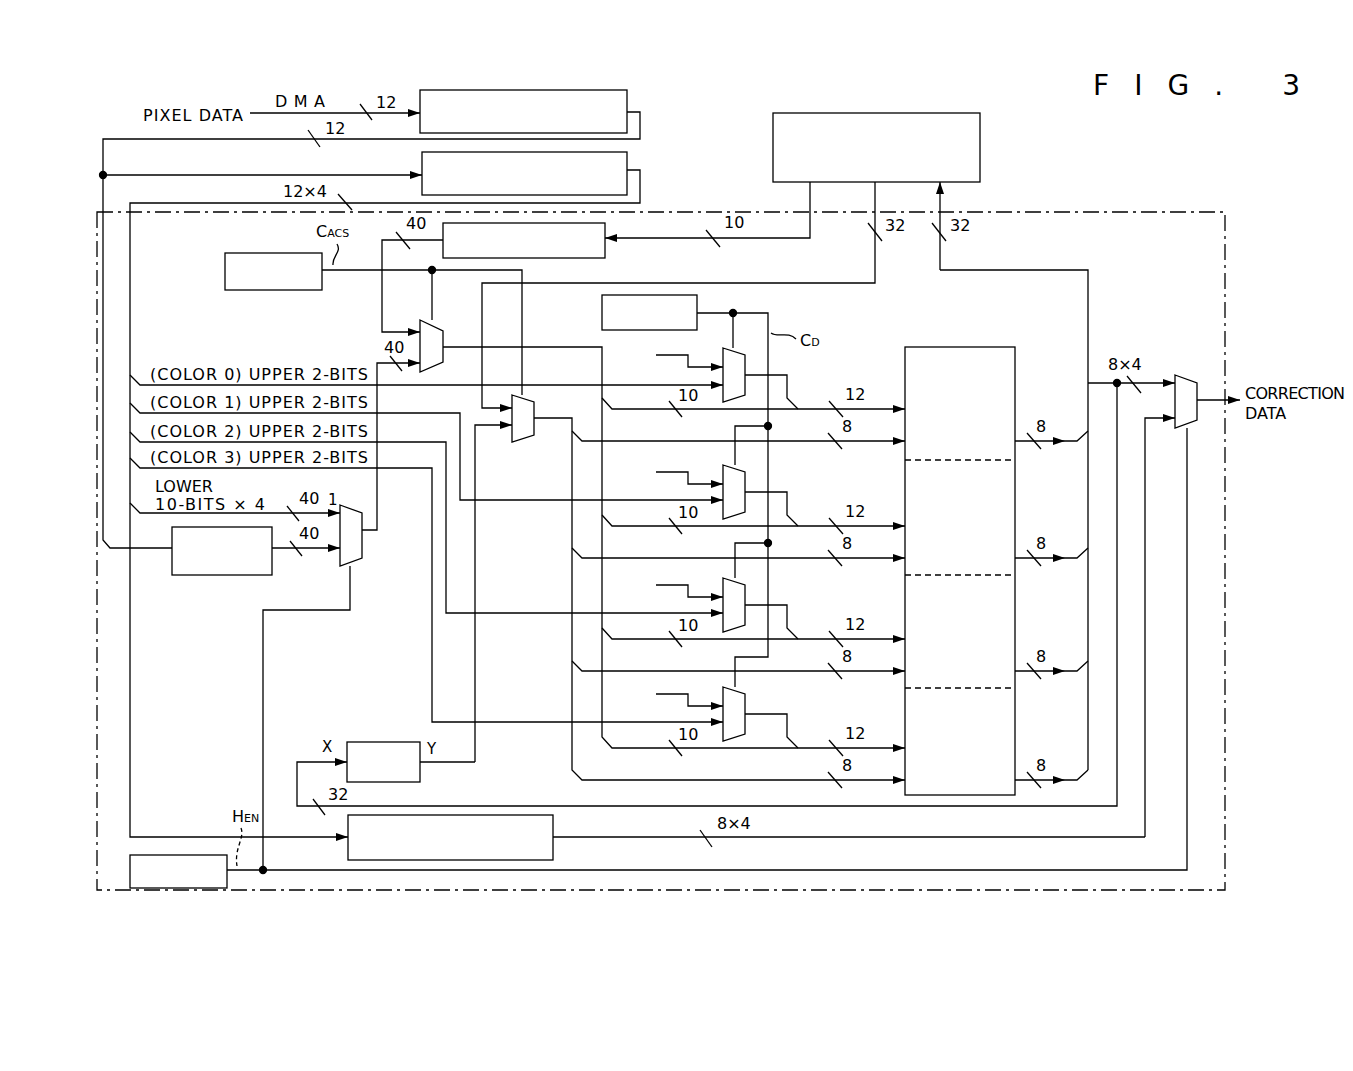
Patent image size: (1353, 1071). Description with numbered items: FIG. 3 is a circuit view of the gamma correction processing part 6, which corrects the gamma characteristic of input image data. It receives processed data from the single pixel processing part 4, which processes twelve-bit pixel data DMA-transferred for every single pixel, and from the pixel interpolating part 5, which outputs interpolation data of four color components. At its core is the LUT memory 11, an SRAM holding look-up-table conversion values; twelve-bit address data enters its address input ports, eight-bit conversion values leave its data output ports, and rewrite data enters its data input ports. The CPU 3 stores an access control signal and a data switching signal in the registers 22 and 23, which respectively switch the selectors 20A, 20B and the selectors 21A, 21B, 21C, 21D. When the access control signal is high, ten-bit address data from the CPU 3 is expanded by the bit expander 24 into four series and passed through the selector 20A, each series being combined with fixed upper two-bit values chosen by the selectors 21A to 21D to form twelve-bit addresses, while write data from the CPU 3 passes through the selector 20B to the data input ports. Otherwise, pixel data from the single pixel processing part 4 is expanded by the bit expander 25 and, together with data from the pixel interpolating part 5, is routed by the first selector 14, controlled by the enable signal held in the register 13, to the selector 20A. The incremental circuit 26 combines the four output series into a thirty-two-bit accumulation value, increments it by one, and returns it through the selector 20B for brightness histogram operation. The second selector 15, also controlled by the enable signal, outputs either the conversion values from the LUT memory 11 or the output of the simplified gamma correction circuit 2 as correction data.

The simplified gamma correction circuit 2 is at (555, 826).
The CPU 3 is at (982, 158).
The single pixel processing part 4 is at (627, 99).
The pixel interpolating part 5 is at (627, 160).
The gamma correction processing part 6 is at (717, 210).
The LUT memory 11 is at (951, 346).
The register 13 is at (179, 855).
The first selector 14 is at (364, 540).
The second selector 15 is at (1183, 374).
The selector 20A is at (438, 337).
The selector 20B is at (536, 410).
The selector 21A is at (729, 404).
The selector 21B is at (729, 521).
The selector 21C is at (729, 634).
The selector 21D is at (729, 743).
The register 22 is at (272, 292).
The register 23 is at (600, 314).
The bit expander 24 is at (605, 251).
The bit expander 25 is at (222, 577).
The incremental circuit 26 is at (386, 741).